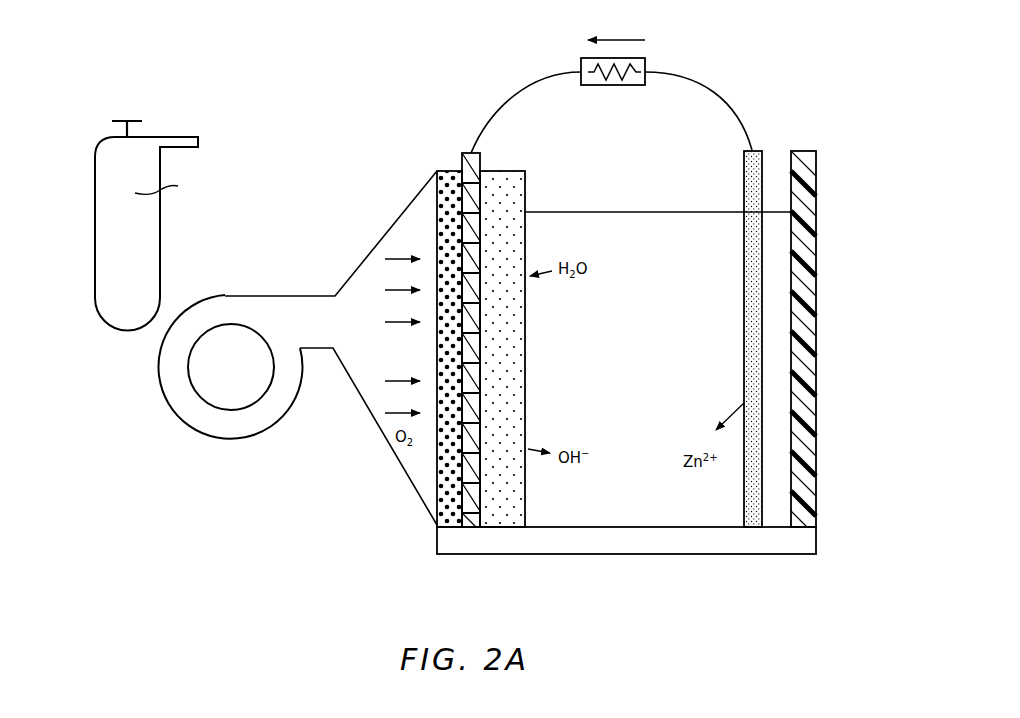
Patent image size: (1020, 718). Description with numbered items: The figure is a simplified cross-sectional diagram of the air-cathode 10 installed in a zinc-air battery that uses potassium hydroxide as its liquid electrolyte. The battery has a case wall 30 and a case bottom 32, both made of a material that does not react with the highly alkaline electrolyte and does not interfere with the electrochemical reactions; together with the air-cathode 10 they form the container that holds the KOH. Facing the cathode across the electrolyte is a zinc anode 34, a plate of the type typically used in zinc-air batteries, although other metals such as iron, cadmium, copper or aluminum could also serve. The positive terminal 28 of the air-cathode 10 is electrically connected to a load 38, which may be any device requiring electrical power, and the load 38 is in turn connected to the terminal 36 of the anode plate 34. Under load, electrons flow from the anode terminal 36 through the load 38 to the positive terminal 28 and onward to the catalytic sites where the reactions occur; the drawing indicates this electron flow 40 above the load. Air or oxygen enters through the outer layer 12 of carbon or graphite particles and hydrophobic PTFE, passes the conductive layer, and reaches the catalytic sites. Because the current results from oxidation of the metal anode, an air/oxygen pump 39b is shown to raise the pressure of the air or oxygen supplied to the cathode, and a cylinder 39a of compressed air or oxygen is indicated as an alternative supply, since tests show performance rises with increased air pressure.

The air-cathode 10 is at (374, 214).
The outer layer 12 is at (442, 488).
The positive terminal 28 is at (471, 153).
The case wall 30 is at (812, 311).
The case bottom 32 is at (633, 536).
The zinc anode 34 is at (762, 152).
The terminal 36 is at (744, 164).
The load 38 is at (646, 63).
The cylinder 39a is at (135, 257).
The air/oxygen pump 39b is at (195, 434).
The electron flow 40 is at (635, 35).